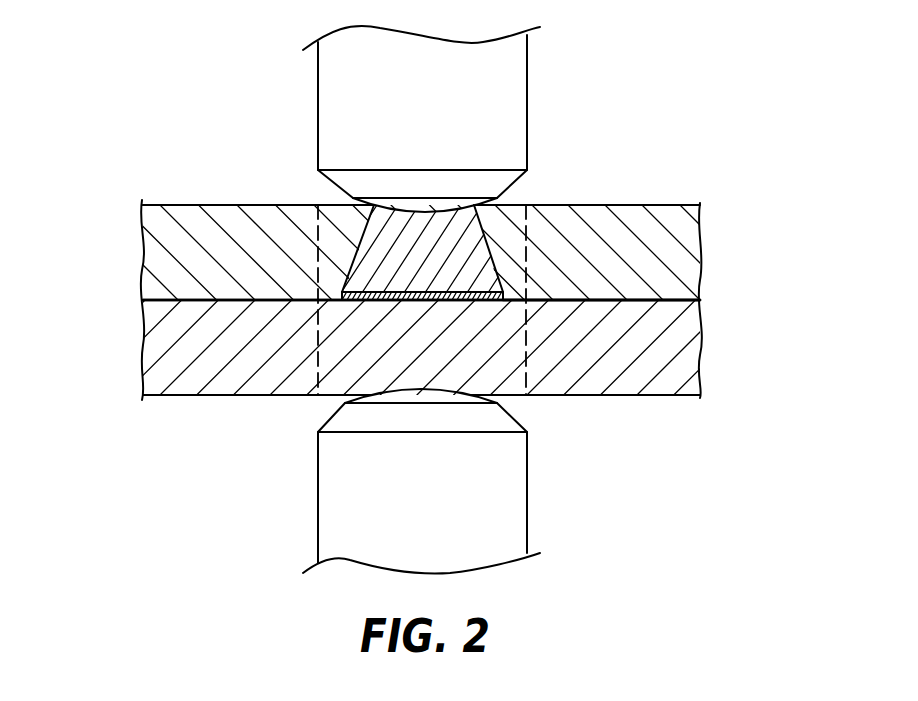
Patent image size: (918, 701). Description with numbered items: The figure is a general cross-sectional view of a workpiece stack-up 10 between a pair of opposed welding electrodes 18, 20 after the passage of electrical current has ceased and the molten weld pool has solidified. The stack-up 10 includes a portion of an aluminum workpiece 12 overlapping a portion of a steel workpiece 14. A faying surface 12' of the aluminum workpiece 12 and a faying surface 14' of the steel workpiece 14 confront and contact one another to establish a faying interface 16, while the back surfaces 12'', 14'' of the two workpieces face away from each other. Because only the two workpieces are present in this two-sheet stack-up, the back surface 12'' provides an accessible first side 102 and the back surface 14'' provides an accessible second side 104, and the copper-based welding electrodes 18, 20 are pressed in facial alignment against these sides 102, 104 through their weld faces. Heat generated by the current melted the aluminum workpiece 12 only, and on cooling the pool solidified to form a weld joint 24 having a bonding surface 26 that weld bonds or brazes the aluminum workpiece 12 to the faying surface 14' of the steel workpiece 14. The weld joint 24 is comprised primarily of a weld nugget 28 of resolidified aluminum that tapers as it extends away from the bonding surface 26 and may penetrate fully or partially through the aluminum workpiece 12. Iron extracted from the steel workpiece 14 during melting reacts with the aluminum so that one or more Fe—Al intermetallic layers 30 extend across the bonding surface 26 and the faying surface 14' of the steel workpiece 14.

The workpiece stack-up 10 is at (120, 283).
The aluminum workpiece 12 is at (414, 244).
The faying surface of the aluminum workpiece 12' is at (466, 294).
The back surface of the aluminum workpiece 12'' is at (436, 173).
The steel workpiece 14 is at (411, 348).
The faying surface of the steel workpiece 14' is at (451, 268).
The back surface of the steel workpiece 14'' is at (441, 420).
The faying interface 16 is at (514, 301).
The welding electrode 18 is at (438, 107).
The welding electrode 20 is at (437, 512).
The weld joint 24 is at (444, 255).
The bonding surface 26 is at (377, 300).
The weld nugget 28 is at (463, 276).
The Fe—Al intermetallic layer 30 is at (402, 303).
The first side 102 is at (230, 205).
The second side 104 is at (230, 395).